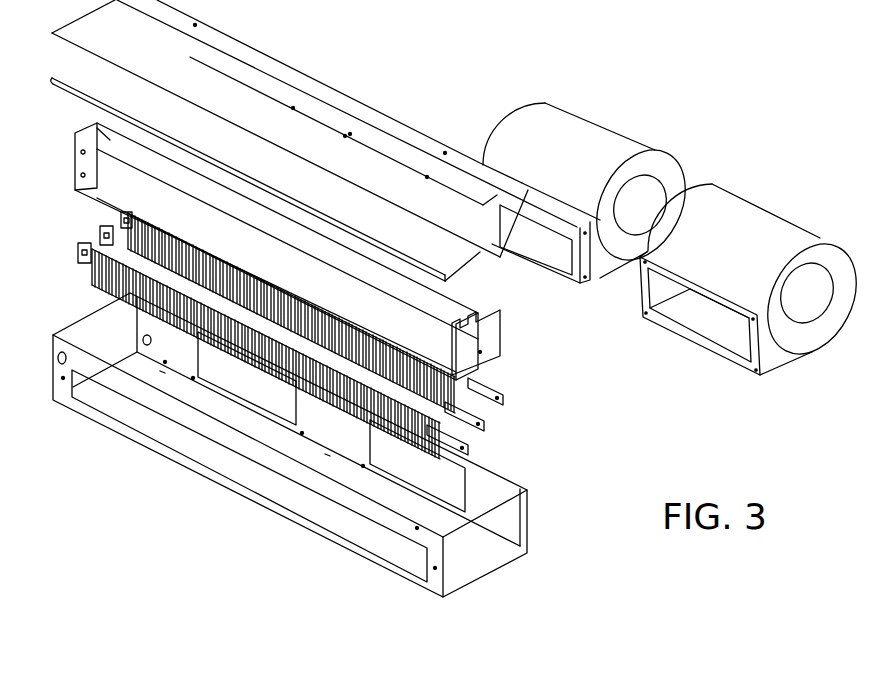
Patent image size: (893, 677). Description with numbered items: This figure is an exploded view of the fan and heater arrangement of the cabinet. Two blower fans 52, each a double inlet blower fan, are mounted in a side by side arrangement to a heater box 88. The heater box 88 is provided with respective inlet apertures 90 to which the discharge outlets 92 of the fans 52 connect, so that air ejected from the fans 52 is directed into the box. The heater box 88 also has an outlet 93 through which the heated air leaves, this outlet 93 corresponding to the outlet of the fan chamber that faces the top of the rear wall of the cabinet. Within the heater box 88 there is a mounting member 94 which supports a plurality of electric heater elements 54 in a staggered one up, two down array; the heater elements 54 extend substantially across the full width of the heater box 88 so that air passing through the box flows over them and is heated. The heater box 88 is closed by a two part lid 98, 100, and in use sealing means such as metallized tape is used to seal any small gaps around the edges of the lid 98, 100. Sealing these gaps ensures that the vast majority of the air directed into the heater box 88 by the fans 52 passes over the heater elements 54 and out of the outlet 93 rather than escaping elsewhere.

The blower fan 52 is at (597, 126).
The heater elements 54 is at (100, 233).
The heater box 88 is at (315, 445).
The inlet apertures 90 is at (259, 388).
The discharge outlets 92 is at (553, 250).
The outlet 93 is at (257, 483).
The mounting member 94 is at (492, 363).
The lid 98 is at (248, 52).
The lid 100 is at (453, 265).